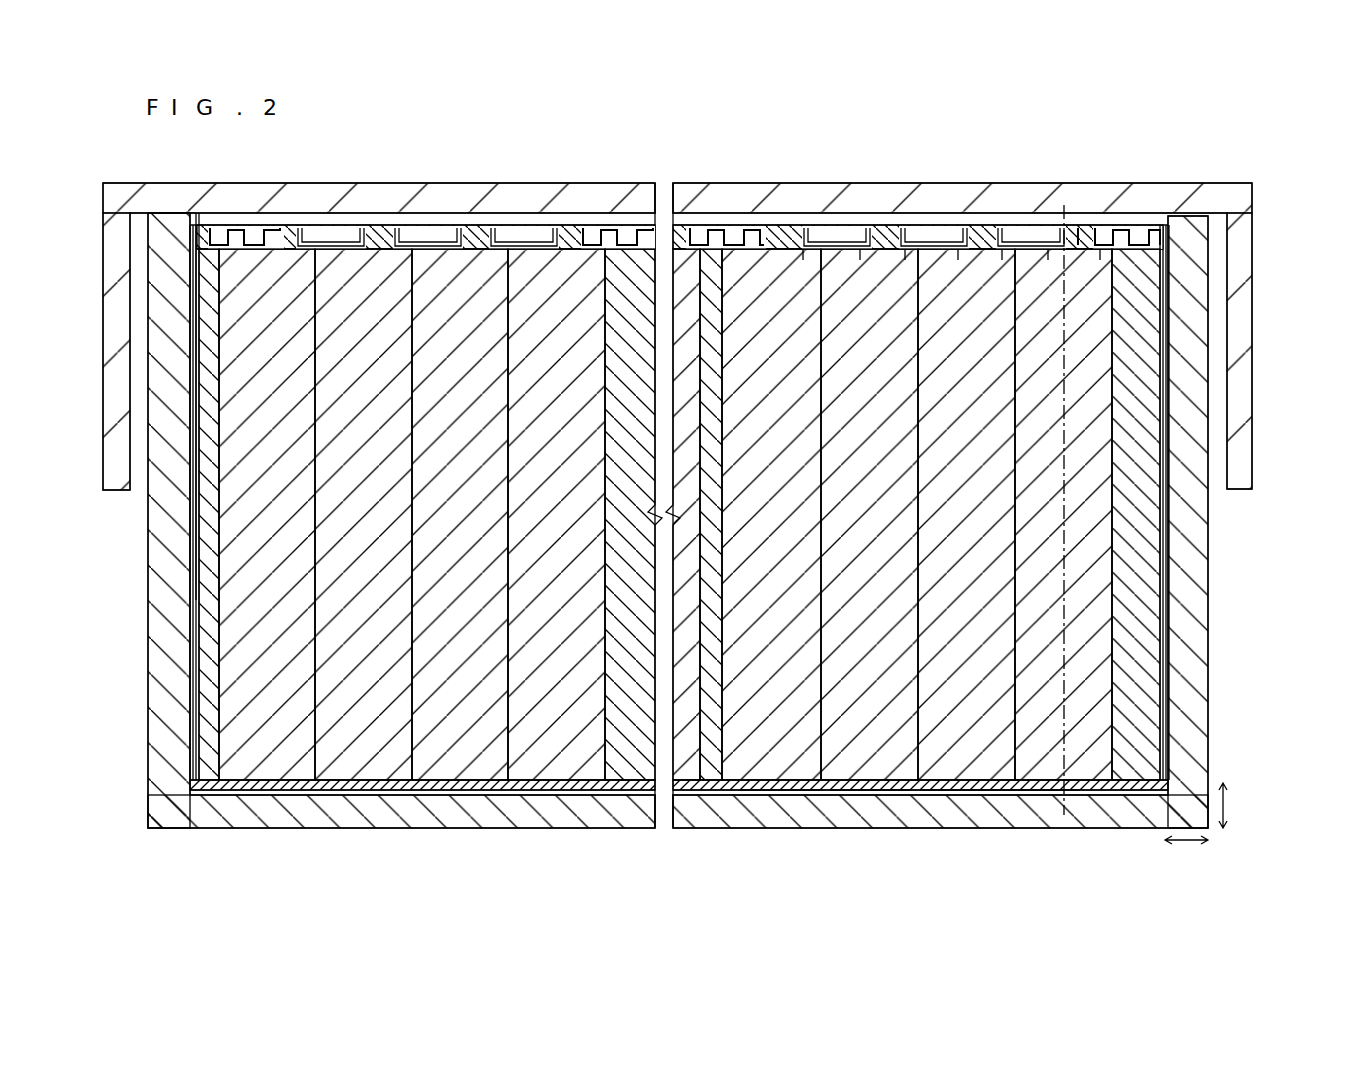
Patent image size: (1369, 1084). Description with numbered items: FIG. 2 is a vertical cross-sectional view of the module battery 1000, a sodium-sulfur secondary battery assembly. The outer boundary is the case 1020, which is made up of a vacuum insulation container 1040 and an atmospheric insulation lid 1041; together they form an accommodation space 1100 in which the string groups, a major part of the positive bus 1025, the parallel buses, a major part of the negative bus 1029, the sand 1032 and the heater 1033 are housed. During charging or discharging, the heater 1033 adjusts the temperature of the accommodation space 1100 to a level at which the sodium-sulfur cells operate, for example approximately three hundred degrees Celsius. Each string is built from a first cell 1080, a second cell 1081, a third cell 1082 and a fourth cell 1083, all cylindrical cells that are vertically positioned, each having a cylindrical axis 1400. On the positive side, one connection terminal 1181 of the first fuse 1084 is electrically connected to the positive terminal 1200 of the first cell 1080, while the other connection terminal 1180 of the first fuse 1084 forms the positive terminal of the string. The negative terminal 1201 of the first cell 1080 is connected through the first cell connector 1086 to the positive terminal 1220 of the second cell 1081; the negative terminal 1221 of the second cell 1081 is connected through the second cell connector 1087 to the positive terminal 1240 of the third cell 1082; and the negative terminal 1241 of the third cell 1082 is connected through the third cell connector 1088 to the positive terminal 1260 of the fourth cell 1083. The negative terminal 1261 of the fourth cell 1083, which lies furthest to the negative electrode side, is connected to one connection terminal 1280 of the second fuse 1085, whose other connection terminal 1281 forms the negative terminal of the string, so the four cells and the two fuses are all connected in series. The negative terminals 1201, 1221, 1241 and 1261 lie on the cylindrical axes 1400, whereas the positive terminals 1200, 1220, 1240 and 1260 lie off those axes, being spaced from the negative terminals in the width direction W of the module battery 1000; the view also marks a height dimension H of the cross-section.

The module battery 1000 is at (1195, 180).
The accommodation space 1100 is at (370, 207).
The case 1020 is at (728, 520).
The vacuum insulation container 1040 is at (1210, 519).
The atmospheric insulation lid 1041 is at (1252, 484).
The sand 1032 is at (450, 222).
The heater 1033 is at (1168, 694).
The negative bus 1029 is at (198, 240).
The other connection terminal of the second fuse 1281 is at (735, 235).
The one connection terminal of the second fuse 1280 is at (770, 235).
The second fuse 1085 is at (755, 235).
The third cell connector 1088 is at (835, 232).
The second cell connector 1087 is at (935, 232).
The first cell connector 1086 is at (1030, 232).
The first fuse 1084 is at (1100, 232).
The one connection terminal of the first fuse 1181 is at (1078, 232).
The other connection terminal of the first fuse 1180 is at (1120, 232).
The positive bus 1025 is at (1150, 232).
The cylindrical axis 1400 is at (1064, 210).
The negative terminal of the fourth cell 1261 is at (745, 252).
The positive terminal of the fourth cell 1260 is at (808, 252).
The negative terminal of the third cell 1241 is at (862, 252).
The positive terminal of the third cell 1240 is at (912, 252).
The negative terminal of the second cell 1221 is at (958, 252).
The positive terminal of the second cell 1220 is at (1005, 252).
The negative terminal of the first cell 1201 is at (1048, 252).
The positive terminal of the first cell 1200 is at (1100, 252).
The fourth cell 1083 is at (780, 785).
The third cell 1082 is at (870, 785).
The second cell 1081 is at (960, 785).
The first cell 1080 is at (1038, 785).
The height dimension H is at (1234, 805).
The width direction W is at (1186, 853).